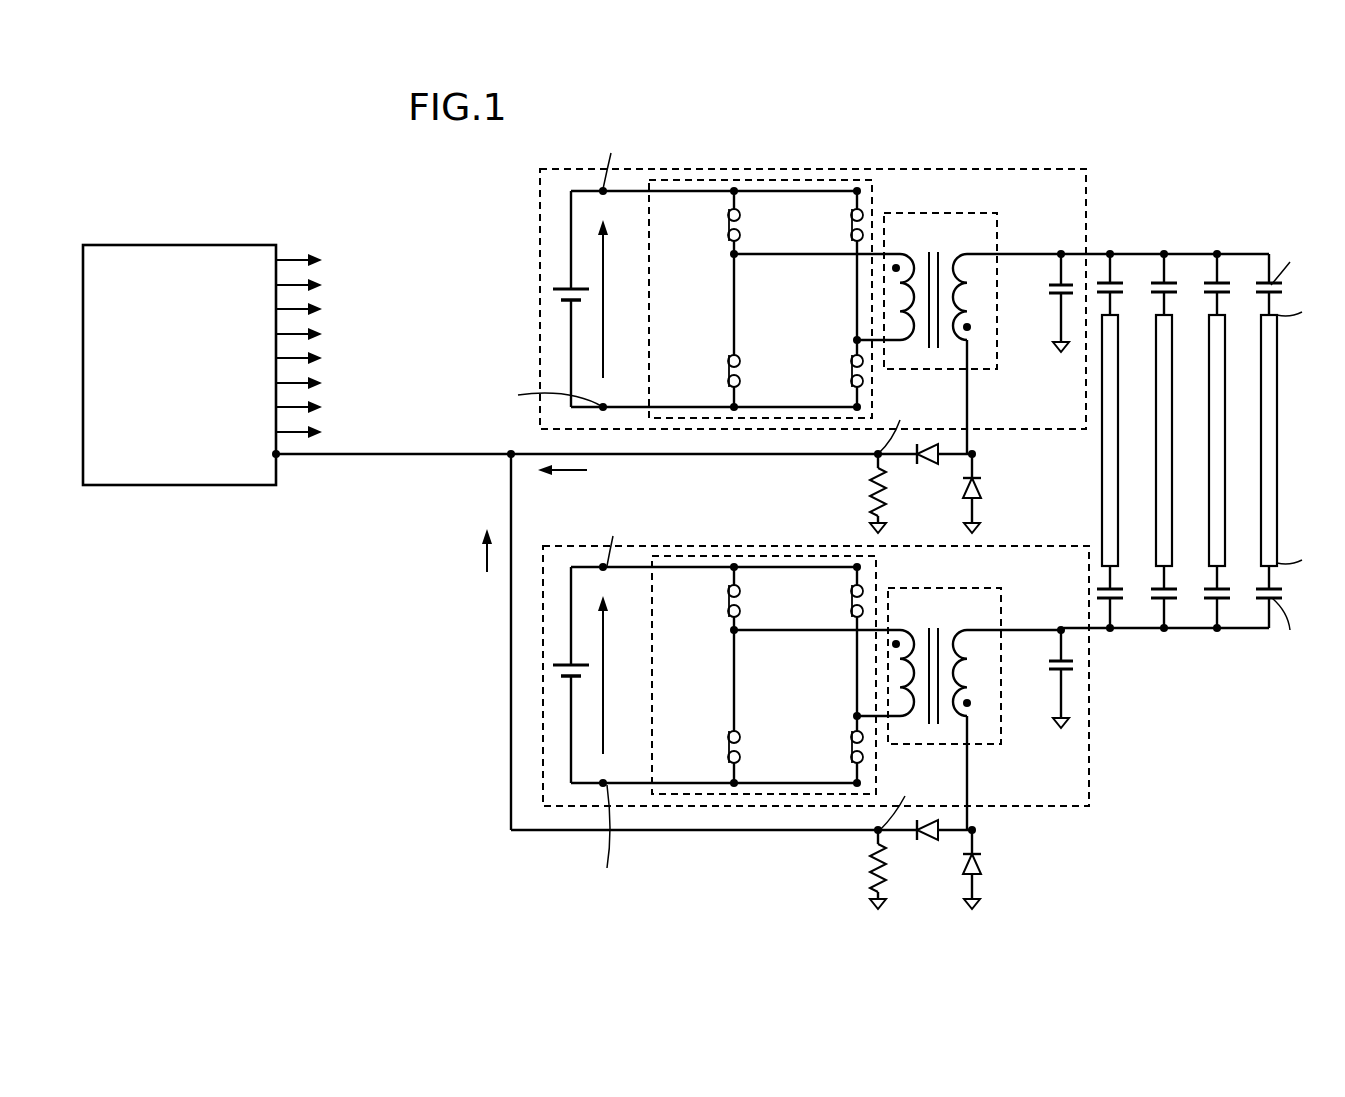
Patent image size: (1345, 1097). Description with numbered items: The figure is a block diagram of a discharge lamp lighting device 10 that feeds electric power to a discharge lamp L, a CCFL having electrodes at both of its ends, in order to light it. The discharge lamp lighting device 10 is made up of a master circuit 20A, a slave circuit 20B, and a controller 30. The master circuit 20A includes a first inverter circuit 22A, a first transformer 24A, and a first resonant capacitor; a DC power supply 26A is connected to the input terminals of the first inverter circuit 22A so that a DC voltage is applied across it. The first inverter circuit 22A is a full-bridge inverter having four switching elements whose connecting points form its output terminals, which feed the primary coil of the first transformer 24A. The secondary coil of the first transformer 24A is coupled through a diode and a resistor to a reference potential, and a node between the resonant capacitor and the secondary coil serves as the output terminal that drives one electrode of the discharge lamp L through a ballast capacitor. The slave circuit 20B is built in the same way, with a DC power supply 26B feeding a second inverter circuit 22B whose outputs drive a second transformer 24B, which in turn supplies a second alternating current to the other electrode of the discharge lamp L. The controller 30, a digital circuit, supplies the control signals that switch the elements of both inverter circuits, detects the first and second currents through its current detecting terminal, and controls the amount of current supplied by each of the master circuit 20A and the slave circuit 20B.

The discharge lamp lighting device 10 is at (1092, 131).
The master circuit 20A is at (827, 168).
The slave circuit 20B is at (783, 546).
The first inverter circuit 22A is at (707, 179).
The second inverter circuit 22B is at (703, 556).
The first transformer 24A is at (953, 212).
The second transformer 24B is at (1001, 712).
The DC power supply 26A is at (553, 289).
The DC power supply 26B is at (553, 666).
The controller 30 is at (232, 245).
The discharge lamp L is at (1278, 432).